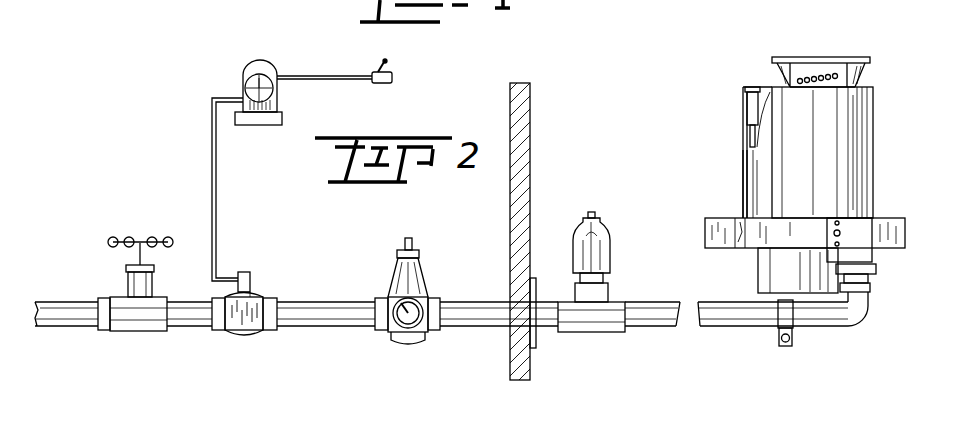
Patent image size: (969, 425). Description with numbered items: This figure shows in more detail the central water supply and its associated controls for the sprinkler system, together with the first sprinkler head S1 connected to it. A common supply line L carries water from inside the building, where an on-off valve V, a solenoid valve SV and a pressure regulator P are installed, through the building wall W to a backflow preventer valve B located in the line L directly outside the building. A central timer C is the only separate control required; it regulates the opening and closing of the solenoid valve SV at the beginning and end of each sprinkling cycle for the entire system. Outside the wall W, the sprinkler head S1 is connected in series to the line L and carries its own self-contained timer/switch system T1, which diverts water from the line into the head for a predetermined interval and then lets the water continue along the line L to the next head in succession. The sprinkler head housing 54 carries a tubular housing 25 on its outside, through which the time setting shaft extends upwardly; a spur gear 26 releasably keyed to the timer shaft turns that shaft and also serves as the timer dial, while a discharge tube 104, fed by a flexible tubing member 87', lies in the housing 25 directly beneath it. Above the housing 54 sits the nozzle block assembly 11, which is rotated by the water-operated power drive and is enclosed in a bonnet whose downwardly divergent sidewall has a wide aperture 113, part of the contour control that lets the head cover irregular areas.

The water supply line L is at (53, 301).
The on-off valve V is at (128, 270).
The solenoid valve SV is at (246, 338).
The central timer C is at (243, 78).
The pressure regulator P is at (388, 276).
The building wall W is at (530, 122).
The backflow preventer valve B is at (610, 250).
The timer/switch system T1 is at (713, 218).
The wide aperture 113 is at (800, 57).
The sprinkler head S1 is at (805, 56).
The spur gear 26 is at (747, 86).
The nozzle block assembly 11 is at (840, 80).
The discharge tube 104 is at (745, 108).
The flexible tubing member 87' is at (722, 140).
The sprinkler head housing 54 is at (873, 142).
The tubular housing 25 is at (743, 168).